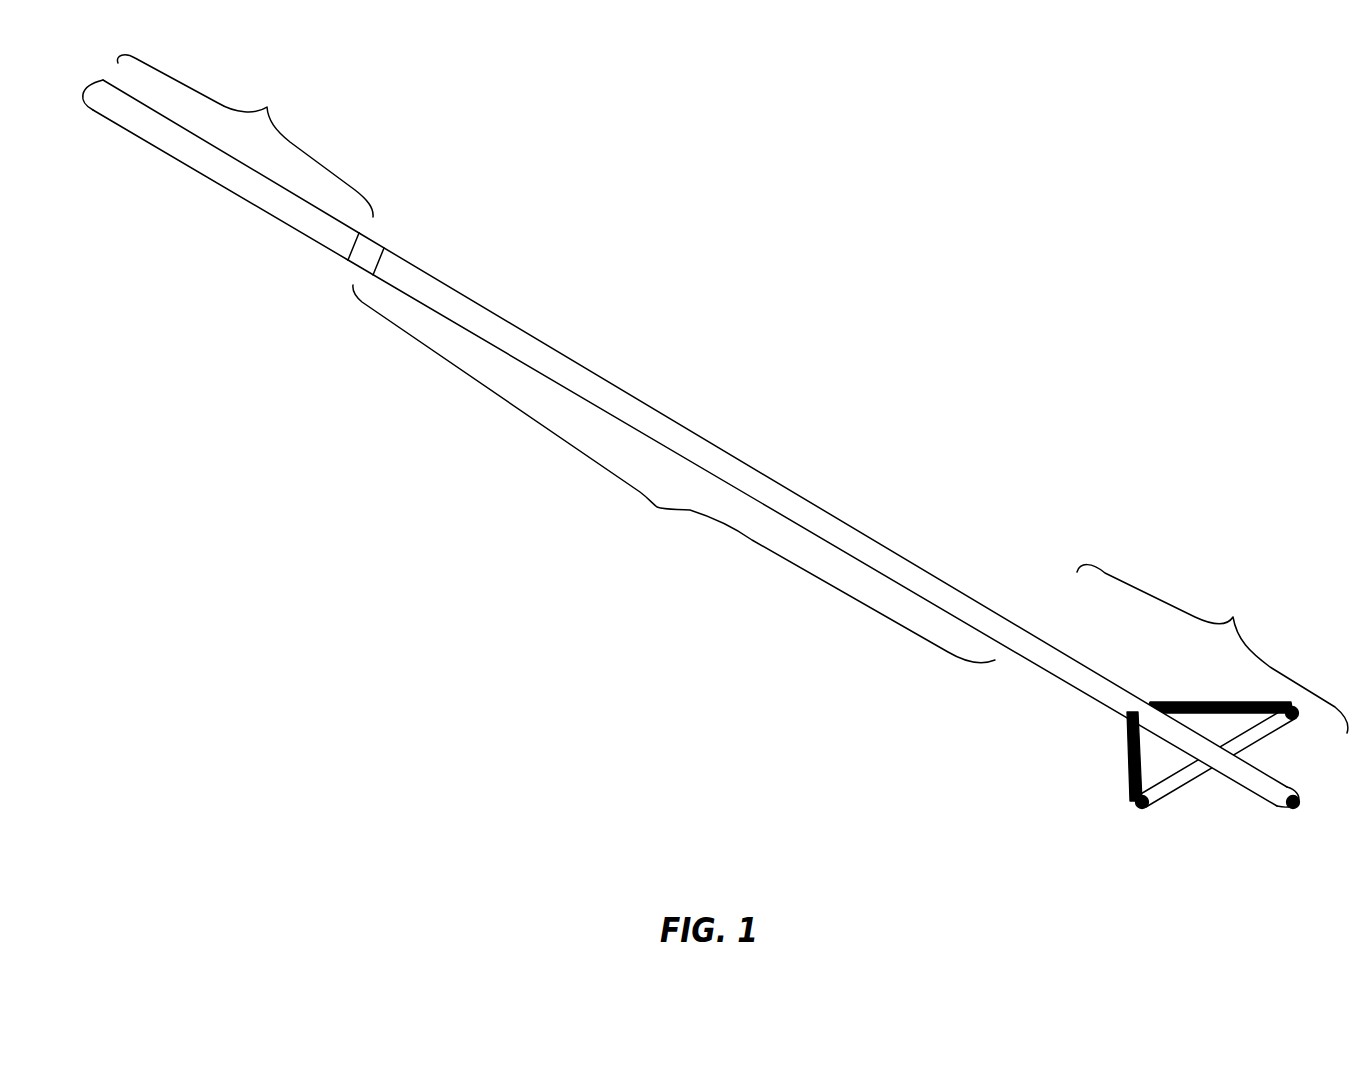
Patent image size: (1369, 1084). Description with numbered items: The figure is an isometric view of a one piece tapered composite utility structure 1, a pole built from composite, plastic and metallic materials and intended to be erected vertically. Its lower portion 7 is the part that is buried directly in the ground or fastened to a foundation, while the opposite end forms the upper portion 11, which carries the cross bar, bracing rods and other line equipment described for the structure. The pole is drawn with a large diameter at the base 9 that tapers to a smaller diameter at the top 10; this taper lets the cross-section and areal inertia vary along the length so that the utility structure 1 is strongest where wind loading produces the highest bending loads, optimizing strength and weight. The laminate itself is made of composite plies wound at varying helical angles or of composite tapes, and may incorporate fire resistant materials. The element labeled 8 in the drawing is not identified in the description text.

The composite utility structure 1 is at (700, 431).
The lower portion 7 is at (238, 165).
The shaft 8 is at (817, 519).
The base 9 is at (99, 82).
The top 10 is at (1293, 786).
The upper portion 11 is at (720, 444).